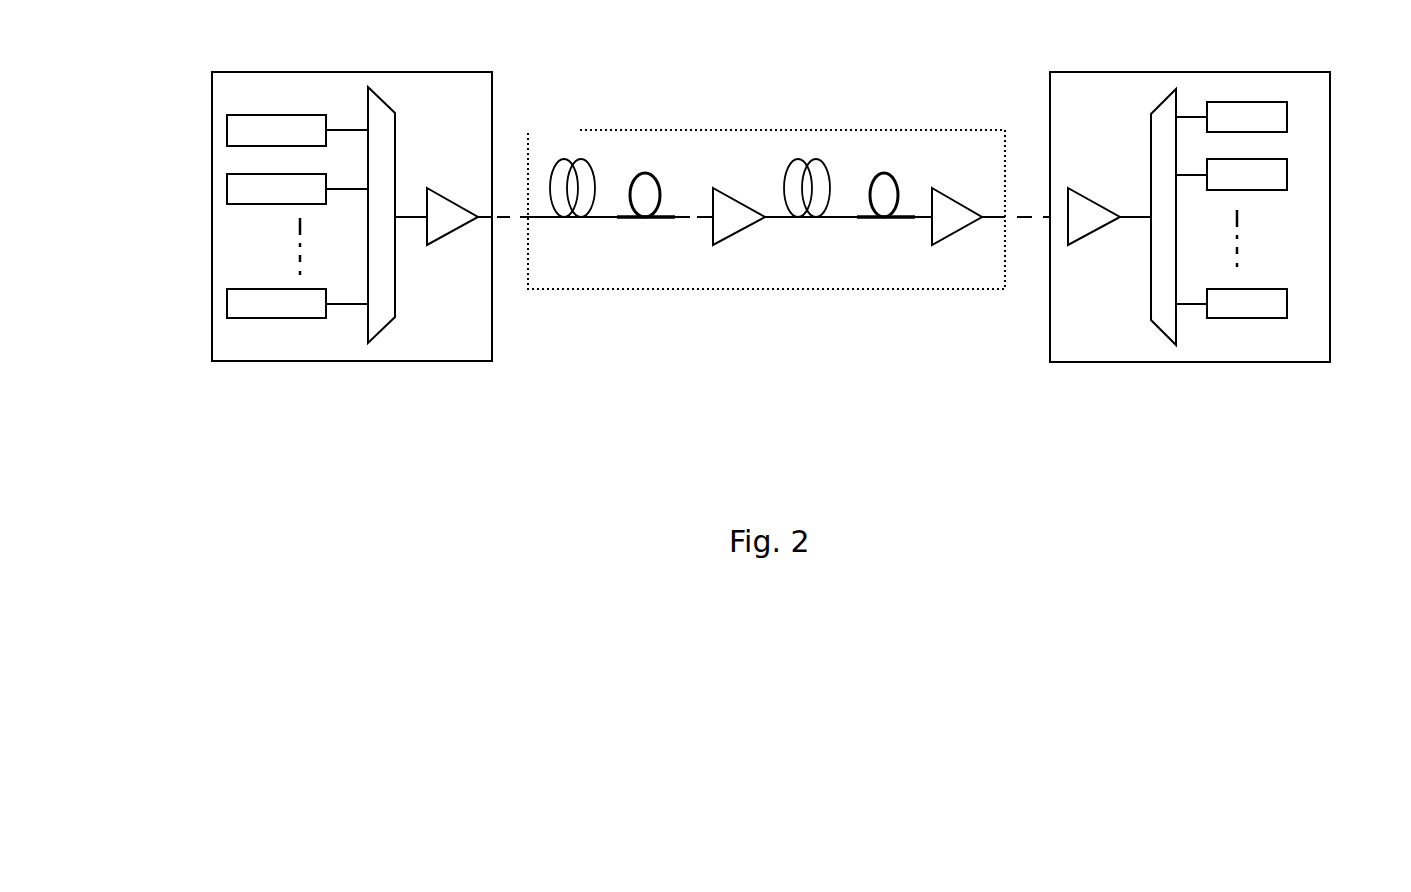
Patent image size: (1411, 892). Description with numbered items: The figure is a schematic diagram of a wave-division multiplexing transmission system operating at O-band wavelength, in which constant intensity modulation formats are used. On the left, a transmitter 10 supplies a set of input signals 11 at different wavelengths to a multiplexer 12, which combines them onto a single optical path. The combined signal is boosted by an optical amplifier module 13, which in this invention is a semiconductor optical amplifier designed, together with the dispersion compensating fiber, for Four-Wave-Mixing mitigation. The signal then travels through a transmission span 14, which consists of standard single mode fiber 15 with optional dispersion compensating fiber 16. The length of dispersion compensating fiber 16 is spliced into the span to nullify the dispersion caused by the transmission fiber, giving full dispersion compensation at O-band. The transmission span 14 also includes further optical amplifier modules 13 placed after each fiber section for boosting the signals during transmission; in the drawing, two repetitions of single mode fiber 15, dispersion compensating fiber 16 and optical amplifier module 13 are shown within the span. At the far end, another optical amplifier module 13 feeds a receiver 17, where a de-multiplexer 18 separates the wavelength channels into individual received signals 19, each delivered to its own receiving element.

The transmitter 10 is at (315, 361).
The input signals 11 is at (227, 302).
The multiplexer 12 is at (383, 102).
The optical amplifier module 13 is at (789, 230).
The transmission span 14 is at (718, 130).
The standard mode fiber 15 is at (690, 193).
The dispersion compensating fiber 16 is at (766, 200).
The receiver 17 is at (1235, 362).
The de-multiplexer 18 is at (1161, 102).
The received signals 19 is at (1287, 300).